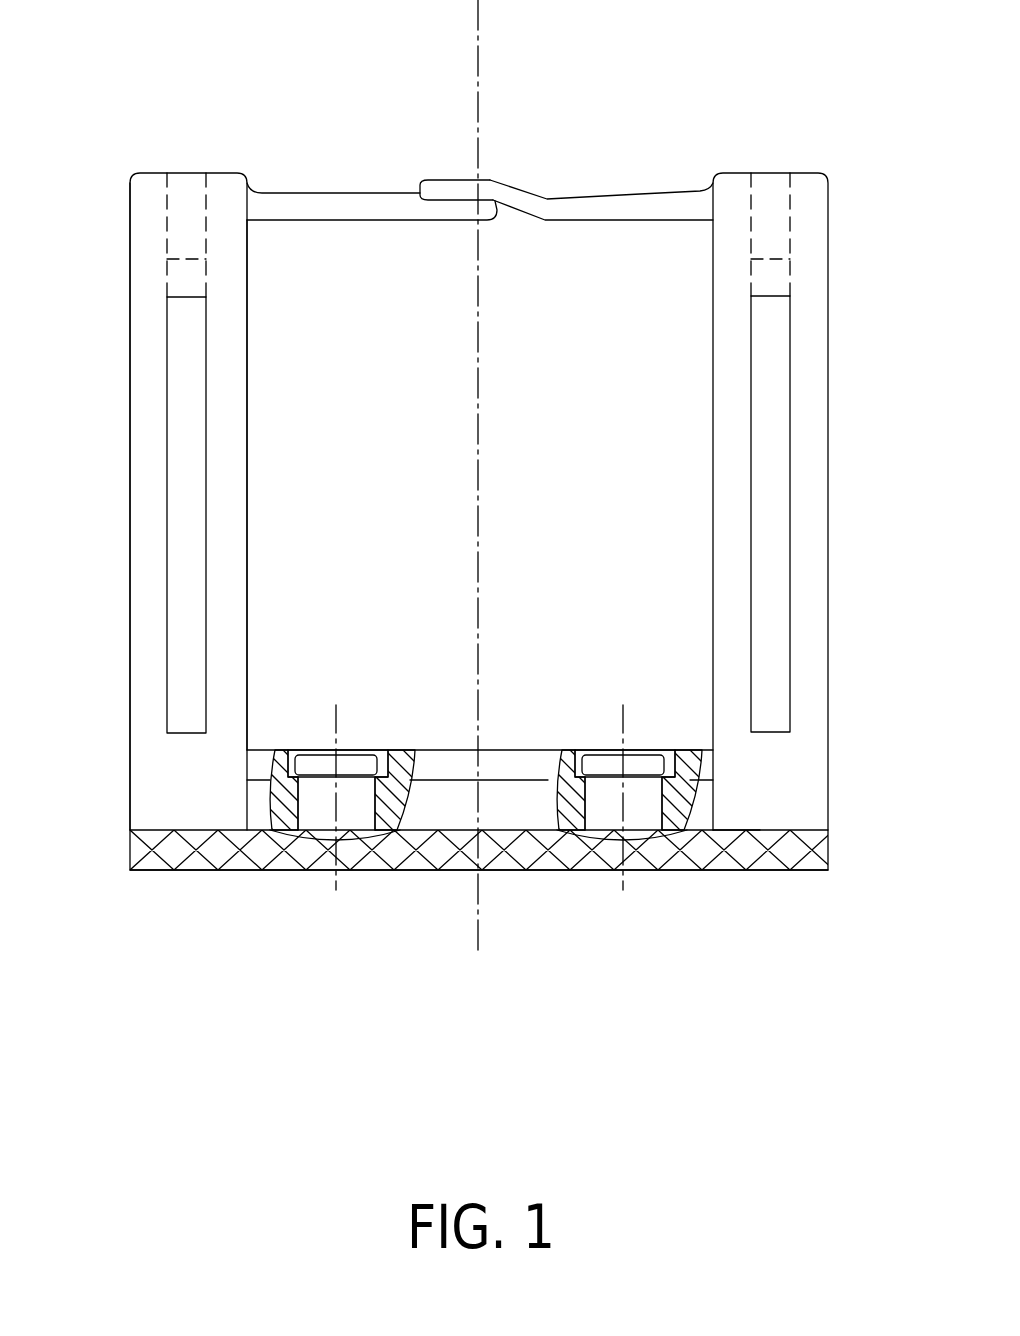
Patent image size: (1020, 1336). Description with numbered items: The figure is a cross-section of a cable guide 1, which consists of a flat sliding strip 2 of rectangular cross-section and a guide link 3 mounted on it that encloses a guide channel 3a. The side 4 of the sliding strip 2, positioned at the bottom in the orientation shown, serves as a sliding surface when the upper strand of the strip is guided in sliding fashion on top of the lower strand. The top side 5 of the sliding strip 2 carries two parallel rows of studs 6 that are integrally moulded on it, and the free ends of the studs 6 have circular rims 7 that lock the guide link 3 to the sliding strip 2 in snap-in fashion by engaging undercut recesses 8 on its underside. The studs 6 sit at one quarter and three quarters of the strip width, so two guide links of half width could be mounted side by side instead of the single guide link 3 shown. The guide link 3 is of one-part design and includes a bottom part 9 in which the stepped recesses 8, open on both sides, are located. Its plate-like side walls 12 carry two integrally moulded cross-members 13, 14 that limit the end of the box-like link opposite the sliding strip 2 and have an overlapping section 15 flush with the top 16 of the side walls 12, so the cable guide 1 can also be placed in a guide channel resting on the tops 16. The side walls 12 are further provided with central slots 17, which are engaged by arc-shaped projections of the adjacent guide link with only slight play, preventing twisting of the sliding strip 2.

The cable guide 1 is at (444, 130).
The sliding strip 2 is at (530, 843).
The guide link 3 is at (190, 132).
The guide channel 3a is at (292, 252).
The side of sliding strip 4 is at (756, 893).
The top side of sliding strip 5 is at (772, 790).
The stud 6 is at (653, 797).
The circular rim 7 is at (645, 760).
The undercut recess 8 is at (580, 760).
The bottom part 9 is at (525, 762).
The side wall 12 is at (145, 197).
The cross-member 13 is at (613, 200).
The cross-member 14 is at (362, 210).
The overlapping section 15 is at (495, 170).
The top of side wall 16 is at (800, 130).
The central slot 17 is at (765, 414).